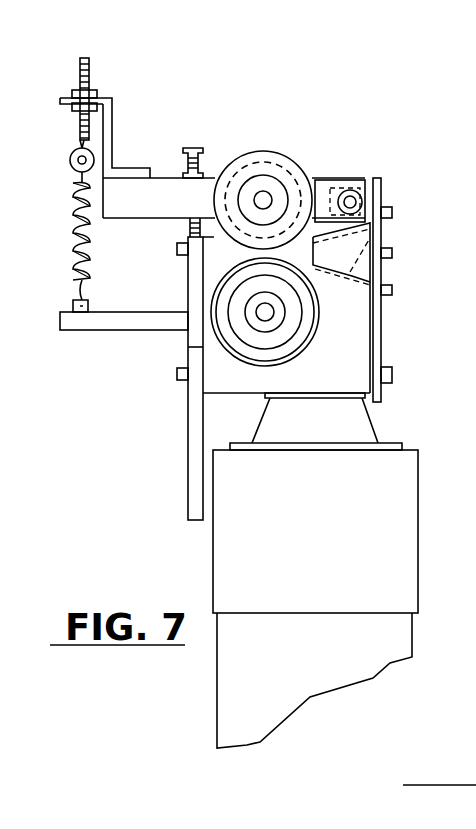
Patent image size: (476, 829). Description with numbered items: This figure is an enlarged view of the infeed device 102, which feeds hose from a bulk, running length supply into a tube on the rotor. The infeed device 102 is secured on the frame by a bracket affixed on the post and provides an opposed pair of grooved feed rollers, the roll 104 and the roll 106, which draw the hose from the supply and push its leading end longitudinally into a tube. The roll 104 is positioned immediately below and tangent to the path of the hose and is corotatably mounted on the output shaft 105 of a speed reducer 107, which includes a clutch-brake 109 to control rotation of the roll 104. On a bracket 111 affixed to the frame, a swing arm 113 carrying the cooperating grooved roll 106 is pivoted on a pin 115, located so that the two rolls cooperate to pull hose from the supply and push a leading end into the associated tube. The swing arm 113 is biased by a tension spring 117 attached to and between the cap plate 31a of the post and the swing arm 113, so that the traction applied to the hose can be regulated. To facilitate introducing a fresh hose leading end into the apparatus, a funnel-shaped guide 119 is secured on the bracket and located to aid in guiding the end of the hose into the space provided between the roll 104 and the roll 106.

The infeed device 102 is at (165, 387).
The cap plate 31a is at (143, 318).
The grooved feed roll 104 is at (306, 338).
The output shaft 105 is at (265, 312).
The grooved roll 106 is at (277, 160).
The speed reducer 107 is at (353, 380).
The clutch-brake 109 is at (347, 532).
The bracket 111 is at (381, 183).
The swing arm 113 is at (322, 180).
The pin 115 is at (355, 200).
The tension spring 117 is at (86, 250).
The funnel-shaped guide 119 is at (372, 238).